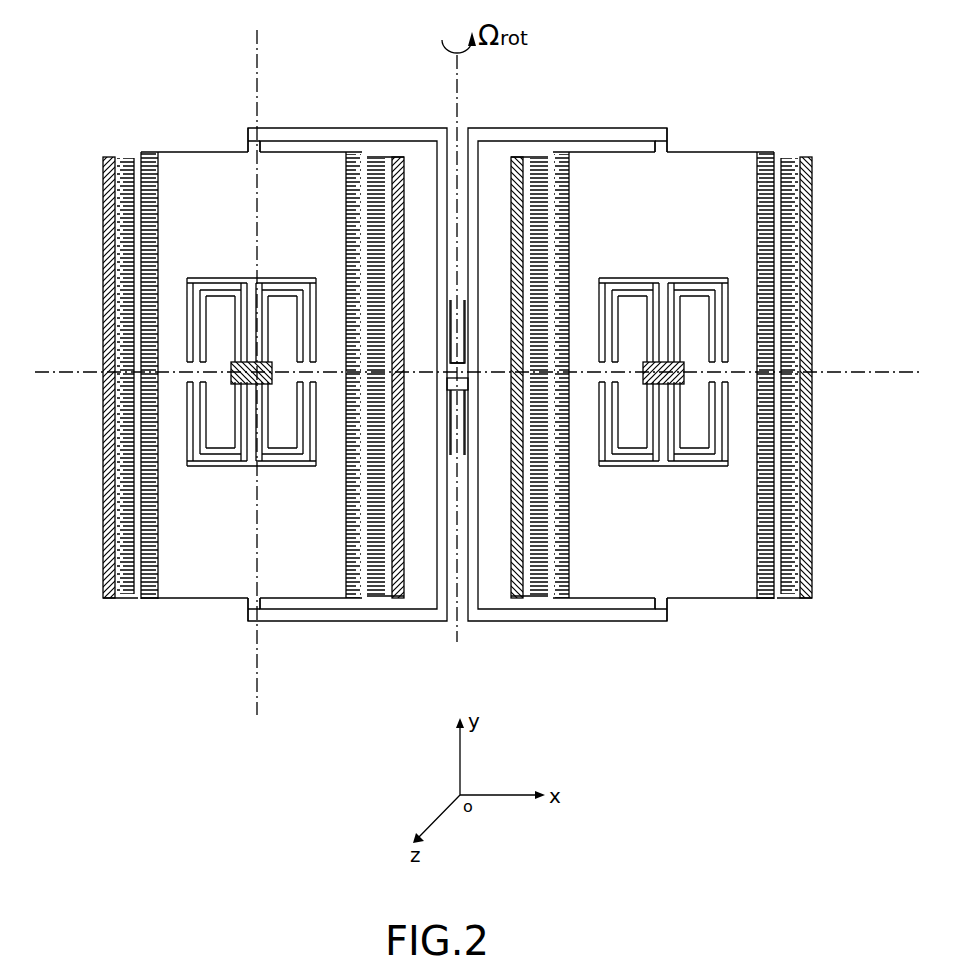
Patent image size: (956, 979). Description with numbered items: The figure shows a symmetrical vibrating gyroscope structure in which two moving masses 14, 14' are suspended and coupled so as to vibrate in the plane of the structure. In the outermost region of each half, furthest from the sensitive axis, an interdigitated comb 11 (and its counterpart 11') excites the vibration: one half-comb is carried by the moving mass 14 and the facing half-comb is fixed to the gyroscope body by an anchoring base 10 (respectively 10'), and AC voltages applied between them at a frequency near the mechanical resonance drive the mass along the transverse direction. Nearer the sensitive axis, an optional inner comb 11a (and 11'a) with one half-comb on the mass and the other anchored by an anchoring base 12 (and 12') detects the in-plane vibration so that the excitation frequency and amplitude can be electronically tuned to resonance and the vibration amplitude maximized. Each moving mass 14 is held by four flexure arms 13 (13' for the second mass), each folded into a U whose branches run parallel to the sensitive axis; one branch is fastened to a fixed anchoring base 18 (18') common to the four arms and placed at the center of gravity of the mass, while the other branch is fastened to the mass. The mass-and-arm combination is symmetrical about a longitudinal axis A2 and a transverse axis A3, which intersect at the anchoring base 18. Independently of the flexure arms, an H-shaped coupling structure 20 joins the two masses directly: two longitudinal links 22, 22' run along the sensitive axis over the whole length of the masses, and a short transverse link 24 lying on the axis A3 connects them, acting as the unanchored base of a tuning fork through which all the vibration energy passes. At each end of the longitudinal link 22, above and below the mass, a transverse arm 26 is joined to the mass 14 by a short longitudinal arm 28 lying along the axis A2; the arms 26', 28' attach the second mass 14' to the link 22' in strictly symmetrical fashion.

The anchoring base 10 is at (96, 350).
The anchoring base 10' is at (826, 350).
The interdigitated comb 11 is at (135, 342).
The interdigitated comb 11' is at (788, 342).
The interdigitated comb 11a is at (378, 598).
The interdigitated comb 11'a is at (554, 408).
The anchoring base 12 is at (416, 370).
The anchoring base 12' is at (502, 370).
The flexure arms 13 is at (251, 370).
The flexure arms 13' is at (663, 370).
The moving mass 14 is at (251, 399).
The moving mass 14' is at (669, 399).
The anchoring base 18 is at (289, 395).
The anchoring base 18' is at (626, 395).
The coupling structure 20 is at (424, 104).
The longitudinal link 22 is at (435, 384).
The longitudinal link 22' is at (483, 384).
The transverse link 24 is at (464, 386).
The transverse arm 26 is at (347, 366).
The transverse arm 26' is at (567, 366).
The short longitudinal arm 28 is at (227, 377).
The short longitudinal arm 28' is at (691, 377).
The second axis A2 is at (255, 50).
The third axis A3 is at (82, 372).